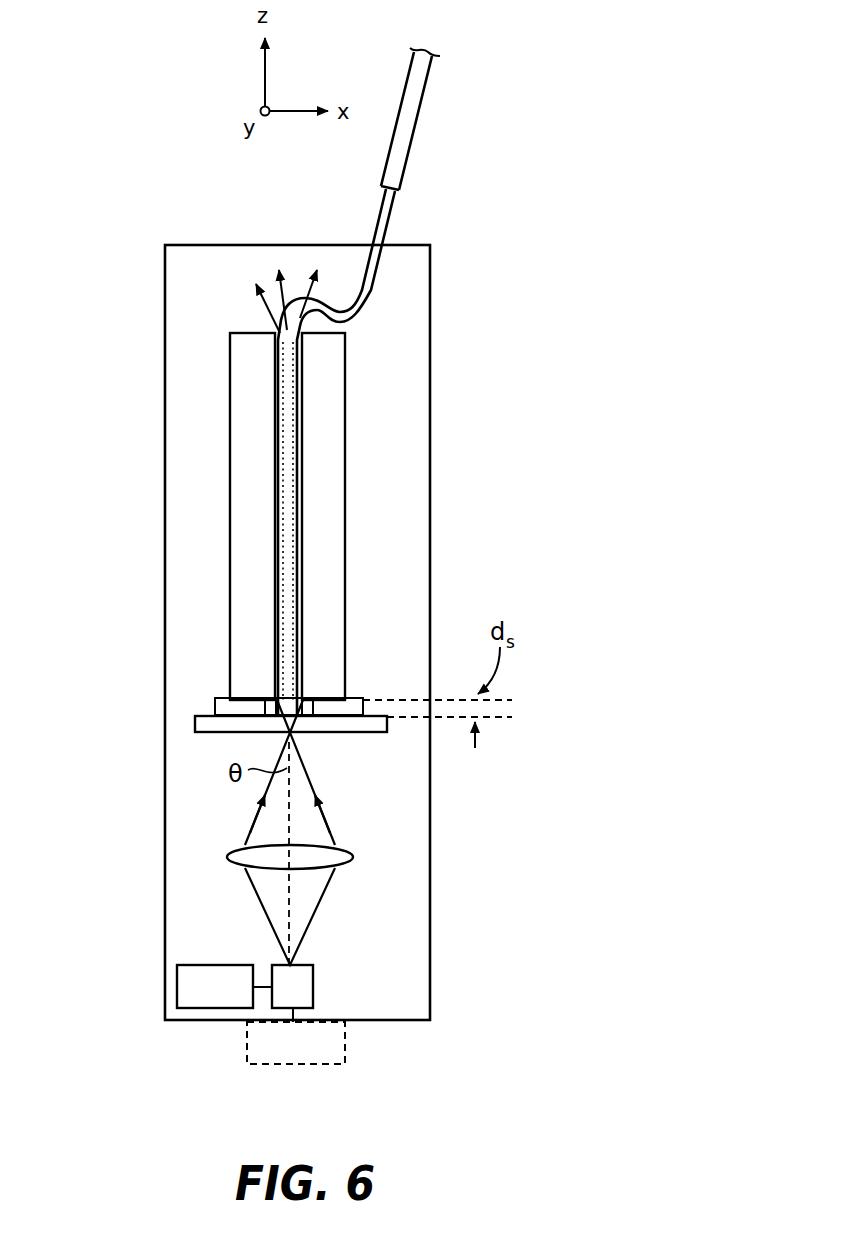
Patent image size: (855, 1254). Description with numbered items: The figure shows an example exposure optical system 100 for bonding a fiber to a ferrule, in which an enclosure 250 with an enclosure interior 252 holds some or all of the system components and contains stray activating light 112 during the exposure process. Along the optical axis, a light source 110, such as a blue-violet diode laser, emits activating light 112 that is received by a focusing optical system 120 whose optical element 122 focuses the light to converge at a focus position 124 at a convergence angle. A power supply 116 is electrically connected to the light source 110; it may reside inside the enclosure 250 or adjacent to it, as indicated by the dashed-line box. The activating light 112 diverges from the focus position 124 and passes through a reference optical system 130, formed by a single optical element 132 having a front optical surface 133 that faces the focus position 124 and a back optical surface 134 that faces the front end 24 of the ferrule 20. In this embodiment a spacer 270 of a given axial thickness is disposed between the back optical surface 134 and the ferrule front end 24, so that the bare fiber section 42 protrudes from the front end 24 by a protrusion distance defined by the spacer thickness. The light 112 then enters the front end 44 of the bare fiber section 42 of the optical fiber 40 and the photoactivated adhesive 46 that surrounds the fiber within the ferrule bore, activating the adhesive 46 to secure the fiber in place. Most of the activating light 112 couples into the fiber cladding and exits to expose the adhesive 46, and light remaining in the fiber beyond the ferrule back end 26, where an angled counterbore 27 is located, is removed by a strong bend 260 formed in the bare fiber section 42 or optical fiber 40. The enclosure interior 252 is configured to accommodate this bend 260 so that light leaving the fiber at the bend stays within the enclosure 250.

The exposure optical system 100 is at (165, 192).
The enclosure 250 is at (430, 380).
The enclosure interior 252 is at (410, 300).
The optical fiber 40 is at (417, 133).
The bare fiber section 42 is at (390, 217).
The photoactivated adhesive 46 is at (299, 427).
The ferrule 20 is at (217, 429).
The back end 26 is at (246, 333).
The front end 24 is at (255, 700).
The front end 44 is at (293, 730).
The bend 260 is at (305, 297).
The angled counterbore 27 is at (262, 332).
The reference optical system 130 is at (280, 702).
The optical element 132 is at (195, 725).
The front optical surface 133 is at (250, 733).
The back optical surface 134 is at (200, 716).
The spacer 270 is at (215, 698).
The activating light 112 is at (270, 332).
The focus position 124 is at (290, 738).
The optical element 122 is at (340, 848).
The focusing optical system 120 is at (227, 855).
The light source 110 is at (315, 982).
The power supply 116 is at (261, 1014).